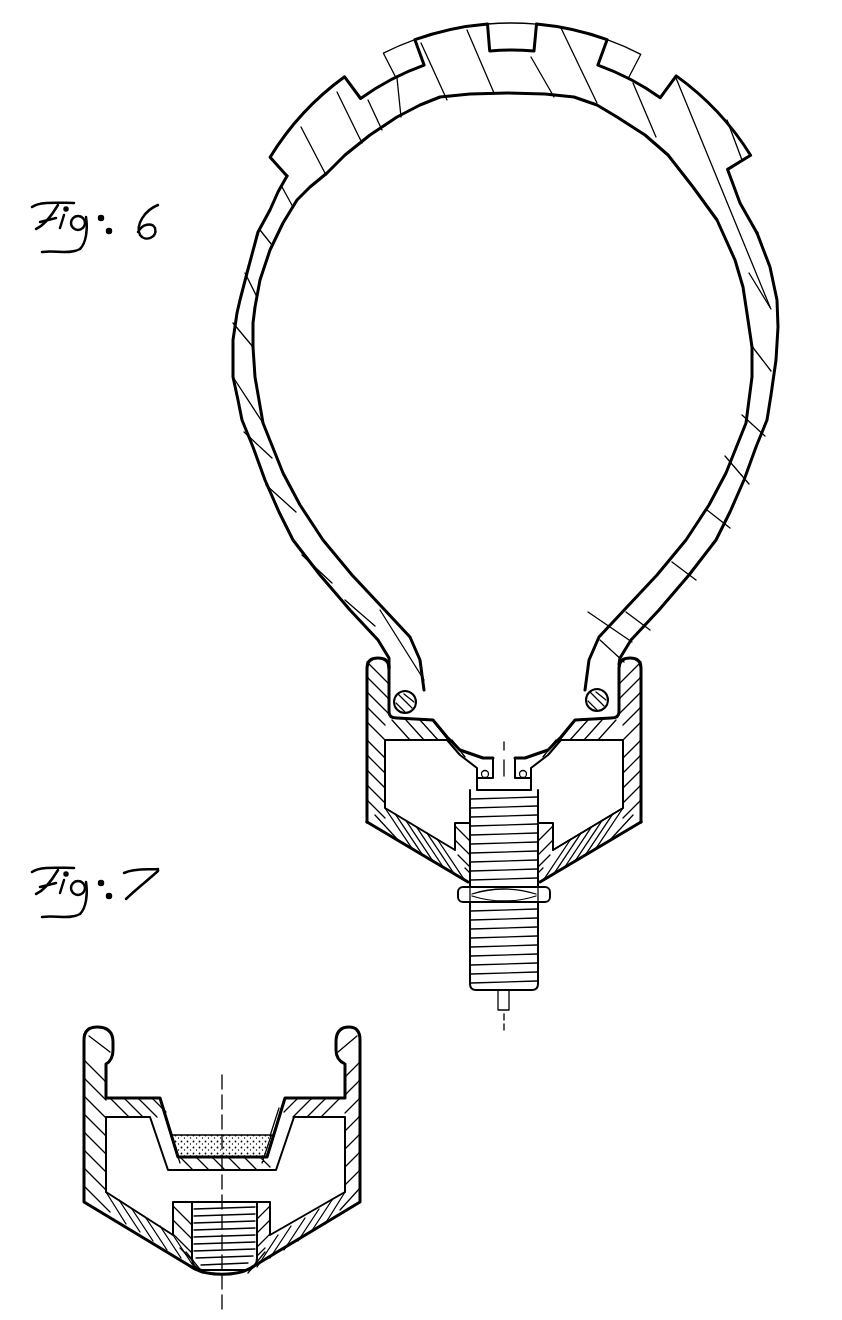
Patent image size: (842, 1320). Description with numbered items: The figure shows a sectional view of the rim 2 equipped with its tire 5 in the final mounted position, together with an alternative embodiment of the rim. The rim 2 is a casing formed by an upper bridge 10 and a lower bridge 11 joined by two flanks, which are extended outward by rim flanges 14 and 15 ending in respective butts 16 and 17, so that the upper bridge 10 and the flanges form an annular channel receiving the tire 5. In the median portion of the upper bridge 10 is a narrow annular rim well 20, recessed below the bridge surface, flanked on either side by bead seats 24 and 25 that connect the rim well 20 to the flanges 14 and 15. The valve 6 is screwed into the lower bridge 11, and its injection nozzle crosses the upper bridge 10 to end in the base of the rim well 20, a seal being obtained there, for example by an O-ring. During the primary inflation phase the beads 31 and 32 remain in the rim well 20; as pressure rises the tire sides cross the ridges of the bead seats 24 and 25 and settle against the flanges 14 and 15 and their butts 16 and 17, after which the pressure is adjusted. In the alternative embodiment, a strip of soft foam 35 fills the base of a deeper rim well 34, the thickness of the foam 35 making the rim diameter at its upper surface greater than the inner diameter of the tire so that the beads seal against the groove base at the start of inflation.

In FIG. 6, the rim 2 is at (356, 825).
In FIG. 6, the tire 5 is at (265, 208).
In FIG. 6, the valve 6 is at (462, 946).
In FIG. 6, the upper bridge 10 is at (620, 792).
In FIG. 6, the lower bridge 11 is at (585, 852).
In FIG. 6, the rim flange 14 is at (400, 702).
In FIG. 6, the rim flange 15 is at (628, 700).
In FIG. 6, the butt 16 is at (385, 666).
In FIG. 6, the butt 17 is at (621, 665).
In FIG. 6, the rim well 20 is at (492, 738).
In FIG. 6, the bead seat 24 is at (432, 706).
In FIG. 6, the bead seat 25 is at (566, 716).
In FIG. 6, the bead 31 is at (396, 719).
In FIG. 6, the bead 32 is at (606, 722).
In FIG. 7, the rim well 34 is at (198, 1118).
In FIG. 7, the foam strip 35 is at (234, 1138).